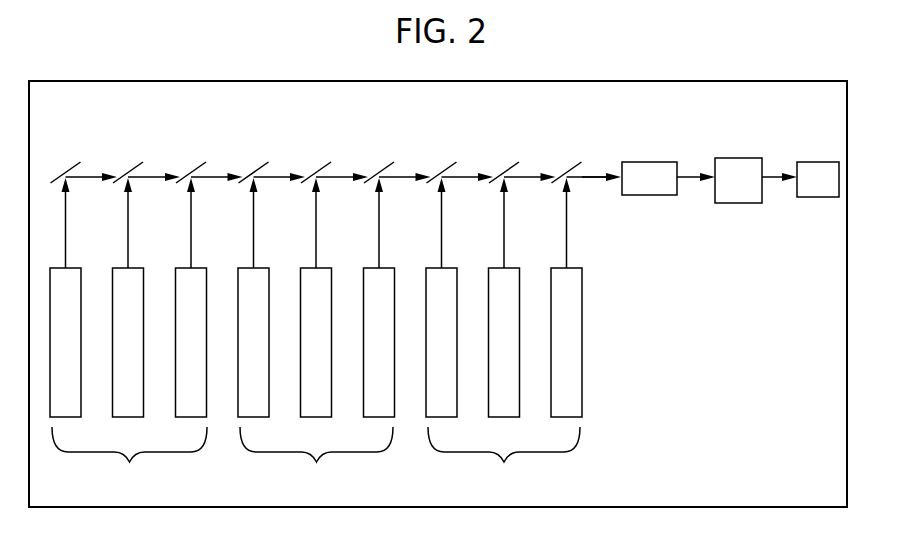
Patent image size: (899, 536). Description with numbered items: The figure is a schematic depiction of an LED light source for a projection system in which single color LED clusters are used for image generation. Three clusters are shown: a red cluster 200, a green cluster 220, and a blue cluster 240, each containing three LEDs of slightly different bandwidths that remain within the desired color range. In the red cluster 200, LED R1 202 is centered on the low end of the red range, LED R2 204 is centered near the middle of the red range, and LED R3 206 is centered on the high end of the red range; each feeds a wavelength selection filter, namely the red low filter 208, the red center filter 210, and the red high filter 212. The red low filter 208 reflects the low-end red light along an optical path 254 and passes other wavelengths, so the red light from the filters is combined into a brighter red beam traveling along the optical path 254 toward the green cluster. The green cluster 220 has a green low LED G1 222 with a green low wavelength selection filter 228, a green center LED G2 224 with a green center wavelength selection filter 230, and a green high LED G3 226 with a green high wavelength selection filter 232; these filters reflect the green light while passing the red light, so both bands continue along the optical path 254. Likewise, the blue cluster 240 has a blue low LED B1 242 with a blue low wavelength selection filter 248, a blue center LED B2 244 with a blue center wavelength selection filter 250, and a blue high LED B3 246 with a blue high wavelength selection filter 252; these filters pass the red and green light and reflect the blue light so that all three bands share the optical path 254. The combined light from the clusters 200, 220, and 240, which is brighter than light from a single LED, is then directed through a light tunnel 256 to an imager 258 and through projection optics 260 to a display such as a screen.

The red cluster 200 is at (129, 459).
The LED R1 202 is at (81, 289).
The LED R2 204 is at (144, 289).
The LED R3 206 is at (206, 289).
The red low filter 208 is at (68, 166).
The red center filter 210 is at (131, 166).
The red high filter 212 is at (194, 166).
The green cluster 220 is at (316, 459).
The green low LED G1 222 is at (269, 289).
The green center LED G2 224 is at (332, 289).
The green high LED G3 226 is at (394, 289).
The green low wavelength selection filter 228 is at (256, 166).
The green center wavelength selection filter 230 is at (319, 166).
The green high wavelength selection filter 232 is at (382, 166).
The blue cluster 240 is at (504, 459).
The blue low LED B1 242 is at (457, 289).
The blue center LED B2 244 is at (520, 289).
The blue high LED B3 246 is at (582, 289).
The blue low wavelength selection filter 248 is at (444, 166).
The blue center wavelength selection filter 250 is at (507, 166).
The blue high wavelength selection filter 252 is at (570, 166).
The optical path 254 is at (583, 178).
The light tunnel 256 is at (632, 162).
The imager 258 is at (723, 158).
The projection optics 260 is at (808, 162).